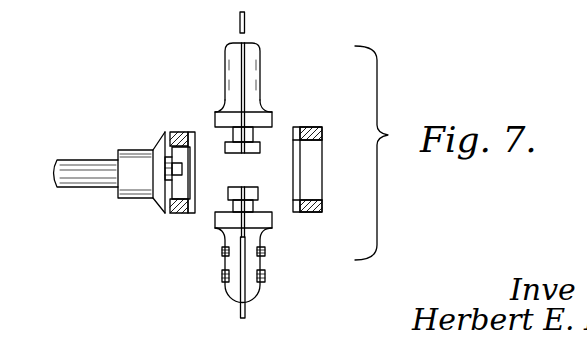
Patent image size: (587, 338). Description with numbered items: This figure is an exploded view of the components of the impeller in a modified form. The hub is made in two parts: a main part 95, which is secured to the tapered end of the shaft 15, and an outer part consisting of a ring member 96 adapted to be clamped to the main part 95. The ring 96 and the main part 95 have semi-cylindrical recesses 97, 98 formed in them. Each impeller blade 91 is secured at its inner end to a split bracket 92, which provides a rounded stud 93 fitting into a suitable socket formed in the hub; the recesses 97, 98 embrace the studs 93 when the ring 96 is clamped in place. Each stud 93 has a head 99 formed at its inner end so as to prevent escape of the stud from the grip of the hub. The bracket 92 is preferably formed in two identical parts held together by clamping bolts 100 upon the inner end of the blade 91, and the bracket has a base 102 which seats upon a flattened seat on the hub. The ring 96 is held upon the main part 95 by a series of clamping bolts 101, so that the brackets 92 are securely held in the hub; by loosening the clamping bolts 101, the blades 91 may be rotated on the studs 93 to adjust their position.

The shaft 15 is at (100, 178).
The blades 91 is at (238, 26).
The split brackets 92 is at (258, 72).
The studs 93 is at (228, 153).
The main part of the hub 95 is at (173, 130).
The ring member 96 is at (310, 128).
The semi-cylindrical recess 97 is at (190, 130).
The semi-cylindrical recess 98 is at (302, 197).
The heads 99 is at (270, 158).
The clamping bolts 100 is at (222, 277).
The clamping bolts 101 is at (248, 12).
The bases 102 is at (260, 118).